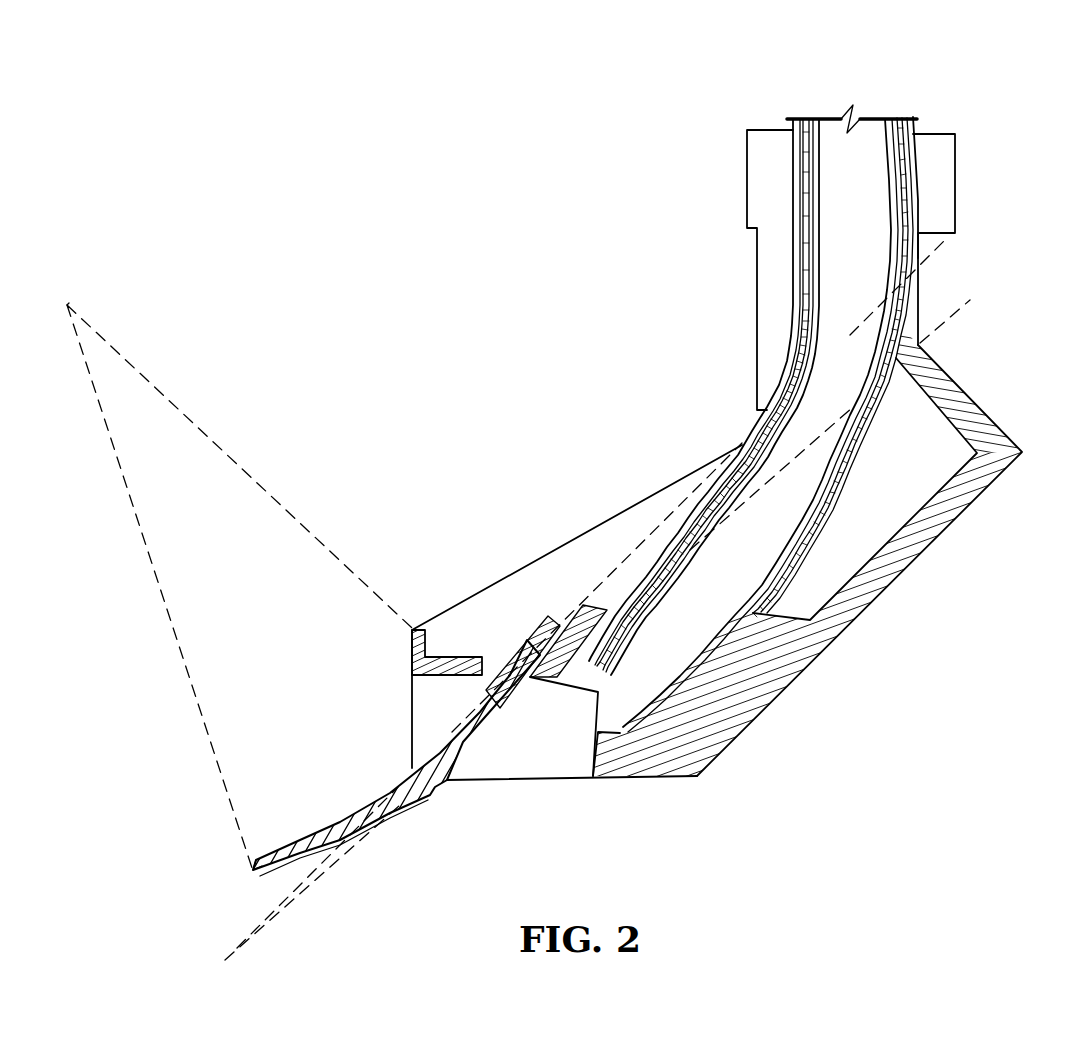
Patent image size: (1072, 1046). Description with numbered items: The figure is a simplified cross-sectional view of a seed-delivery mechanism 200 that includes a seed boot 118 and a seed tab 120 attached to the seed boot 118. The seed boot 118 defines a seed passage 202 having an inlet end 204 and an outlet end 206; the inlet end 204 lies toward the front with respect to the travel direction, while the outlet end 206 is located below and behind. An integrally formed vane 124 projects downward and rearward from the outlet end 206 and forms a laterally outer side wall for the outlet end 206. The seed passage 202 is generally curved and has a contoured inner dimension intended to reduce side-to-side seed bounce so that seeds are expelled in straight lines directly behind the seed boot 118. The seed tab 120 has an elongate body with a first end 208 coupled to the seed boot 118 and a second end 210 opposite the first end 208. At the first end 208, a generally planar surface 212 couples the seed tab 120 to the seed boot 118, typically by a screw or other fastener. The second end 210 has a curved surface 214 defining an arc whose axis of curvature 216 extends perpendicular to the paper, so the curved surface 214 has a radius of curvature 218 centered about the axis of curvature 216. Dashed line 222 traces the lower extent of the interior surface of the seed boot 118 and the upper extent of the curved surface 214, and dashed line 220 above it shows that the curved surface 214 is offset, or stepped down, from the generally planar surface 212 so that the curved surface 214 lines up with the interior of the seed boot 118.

The seed-delivery mechanism 200 is at (941, 84).
The inlet end 204 is at (855, 152).
The dashed line 222 is at (627, 603).
The seed boot 118 is at (792, 328).
The seed passage 202 is at (750, 540).
The outlet end 206 is at (613, 712).
The vane 124 is at (563, 760).
The dashed line 220 is at (642, 548).
The radius of curvature 218 is at (270, 494).
The axis of curvature 216 is at (67, 305).
The seed tab 120 is at (298, 836).
The curved surface 214 is at (338, 837).
The second end 210 is at (252, 870).
The generally planar surface 212 is at (520, 635).
The first end 208 is at (555, 603).